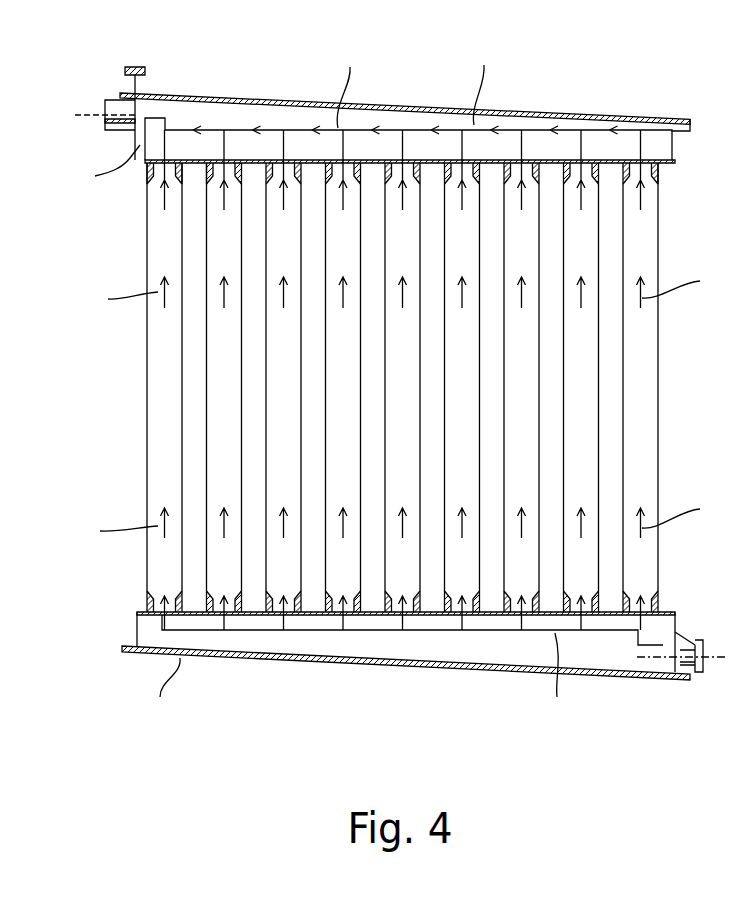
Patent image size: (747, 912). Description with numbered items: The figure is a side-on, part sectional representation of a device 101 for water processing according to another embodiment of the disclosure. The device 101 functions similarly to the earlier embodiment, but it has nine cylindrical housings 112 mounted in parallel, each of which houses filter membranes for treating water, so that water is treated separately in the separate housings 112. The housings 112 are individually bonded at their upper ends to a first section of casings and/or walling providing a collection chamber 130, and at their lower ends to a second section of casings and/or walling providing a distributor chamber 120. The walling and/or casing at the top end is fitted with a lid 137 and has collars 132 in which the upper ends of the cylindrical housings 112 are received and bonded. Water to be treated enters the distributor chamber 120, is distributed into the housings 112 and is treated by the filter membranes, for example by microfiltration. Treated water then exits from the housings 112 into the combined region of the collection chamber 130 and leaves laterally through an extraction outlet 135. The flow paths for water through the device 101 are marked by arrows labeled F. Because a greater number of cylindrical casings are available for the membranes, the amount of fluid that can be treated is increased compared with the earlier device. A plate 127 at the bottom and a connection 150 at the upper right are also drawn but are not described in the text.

The device for water processing 101 is at (576, 44).
The cylindrical housings 112 is at (402, 380).
The distributor chamber 120 is at (397, 640).
The bottom plate 127 is at (305, 660).
The collection chamber 130 is at (532, 112).
The collars 132 is at (210, 172).
The extraction outlet 135 is at (96, 126).
The lid 137 is at (292, 100).
The tube connection 150 is at (665, 165).